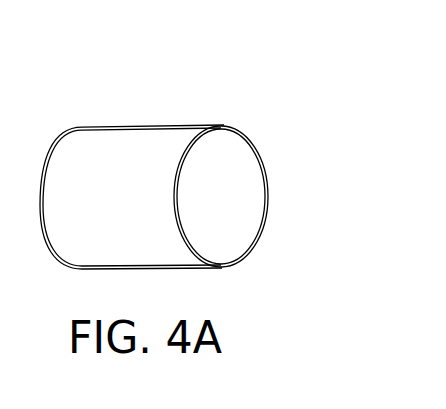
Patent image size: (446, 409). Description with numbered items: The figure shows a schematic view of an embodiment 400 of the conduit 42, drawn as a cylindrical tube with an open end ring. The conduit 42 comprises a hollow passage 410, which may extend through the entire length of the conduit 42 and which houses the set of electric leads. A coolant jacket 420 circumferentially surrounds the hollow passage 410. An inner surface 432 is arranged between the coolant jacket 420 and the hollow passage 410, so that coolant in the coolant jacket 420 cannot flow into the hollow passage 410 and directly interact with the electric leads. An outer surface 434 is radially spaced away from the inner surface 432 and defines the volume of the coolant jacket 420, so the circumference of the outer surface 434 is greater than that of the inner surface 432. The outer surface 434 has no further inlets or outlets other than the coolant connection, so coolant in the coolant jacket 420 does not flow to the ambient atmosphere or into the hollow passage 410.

The embodiment of the conduit 400 is at (278, 75).
The conduit 42 is at (209, 185).
The hollow passage 410 is at (237, 168).
The coolant jacket 420 is at (110, 126).
The inner surface 432 is at (197, 193).
The outer surface 434 is at (173, 191).